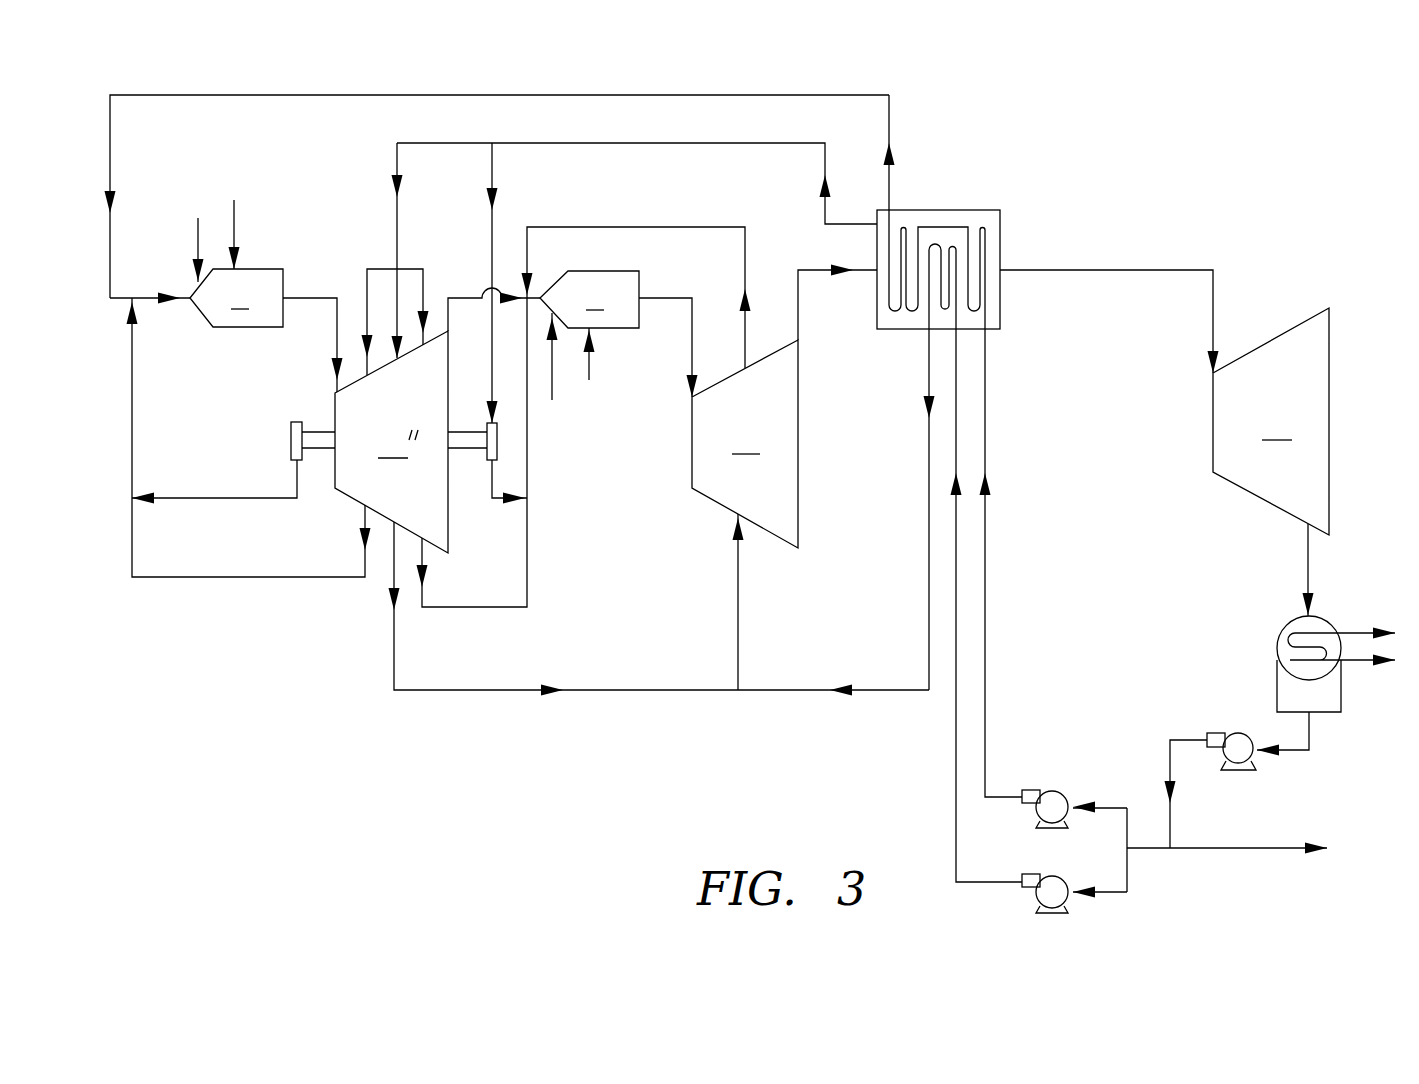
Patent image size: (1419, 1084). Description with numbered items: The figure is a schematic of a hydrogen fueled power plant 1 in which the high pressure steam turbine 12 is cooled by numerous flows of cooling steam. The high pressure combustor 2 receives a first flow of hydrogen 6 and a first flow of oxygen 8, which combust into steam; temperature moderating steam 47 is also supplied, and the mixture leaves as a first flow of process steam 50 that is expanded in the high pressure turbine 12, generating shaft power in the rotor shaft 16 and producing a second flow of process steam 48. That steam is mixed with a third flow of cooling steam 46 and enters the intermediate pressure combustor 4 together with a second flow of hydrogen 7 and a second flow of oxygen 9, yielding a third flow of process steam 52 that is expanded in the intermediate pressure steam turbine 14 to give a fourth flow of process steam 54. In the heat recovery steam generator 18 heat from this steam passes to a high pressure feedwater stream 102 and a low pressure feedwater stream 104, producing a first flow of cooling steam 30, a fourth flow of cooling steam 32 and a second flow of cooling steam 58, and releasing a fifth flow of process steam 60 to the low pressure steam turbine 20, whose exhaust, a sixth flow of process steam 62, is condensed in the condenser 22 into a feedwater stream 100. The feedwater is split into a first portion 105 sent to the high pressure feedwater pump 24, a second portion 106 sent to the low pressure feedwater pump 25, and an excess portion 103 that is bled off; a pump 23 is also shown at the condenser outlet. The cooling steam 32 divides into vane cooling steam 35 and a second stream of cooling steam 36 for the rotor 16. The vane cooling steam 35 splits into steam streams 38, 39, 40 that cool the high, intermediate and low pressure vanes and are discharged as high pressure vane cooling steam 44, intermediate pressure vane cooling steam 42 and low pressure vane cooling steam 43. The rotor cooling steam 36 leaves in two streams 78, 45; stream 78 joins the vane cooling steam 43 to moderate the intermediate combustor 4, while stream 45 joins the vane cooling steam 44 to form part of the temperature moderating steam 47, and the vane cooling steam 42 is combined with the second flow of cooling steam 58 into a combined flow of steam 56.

The hydrogen fueled power plant 1 is at (1238, 116).
The high pressure combustor 2 is at (236, 298).
The intermediate pressure combustor 4 is at (589, 299).
The first flow of hydrogen 6 is at (198, 240).
The second flow of hydrogen 7 is at (552, 382).
The first flow of oxygen 8 is at (234, 224).
The second flow of oxygen 9 is at (589, 362).
The high pressure steam turbine 12 is at (391, 442).
The intermediate pressure steam turbine 14 is at (745, 444).
The rotor shaft 16 is at (290, 437).
The heat recovery steam generator 18 is at (1003, 235).
The low pressure steam turbine 20 is at (1271, 421).
The condenser 22 is at (1280, 630).
The pump 23 is at (1238, 735).
The high pressure feedwater pump 24 is at (1055, 796).
The low pressure feedwater pump 25 is at (1043, 892).
The first flow of cooling steam 30 is at (890, 185).
The fourth flow of cooling steam 32 is at (698, 143).
The vane cooling steam 35 is at (440, 143).
The second stream of cooling steam 36 is at (492, 170).
The steam stream 38 is at (367, 288).
The steam stream 39 is at (398, 284).
The steam stream 40 is at (425, 285).
The intermediate pressure vane cooling steam 42 is at (393, 665).
The low pressure vane cooling steam 43 is at (482, 608).
The high pressure vane cooling steam 44 is at (243, 578).
The stream 45 is at (243, 499).
The third flow of cooling steam 46 is at (655, 227).
The temperature moderating steam 47 is at (145, 299).
The second flow of process steam 48 is at (460, 300).
The first flow of process steam 50 is at (337, 324).
The third flow of process steam 52 is at (692, 326).
The fourth flow of process steam 54 is at (822, 268).
The combined flow of steam 56 is at (738, 632).
The second flow of cooling steam 58 is at (890, 690).
The fifth flow of process steam 60 is at (1160, 270).
The sixth flow of process steam 62 is at (1309, 570).
The stream 78 is at (493, 503).
The feedwater stream 100 is at (1309, 735).
The high pressure feedwater stream 102 is at (985, 667).
The excess portion 103 is at (1250, 850).
The low pressure feedwater stream 104 is at (955, 773).
The first portion 105 is at (1127, 819).
The second portion 106 is at (1127, 865).